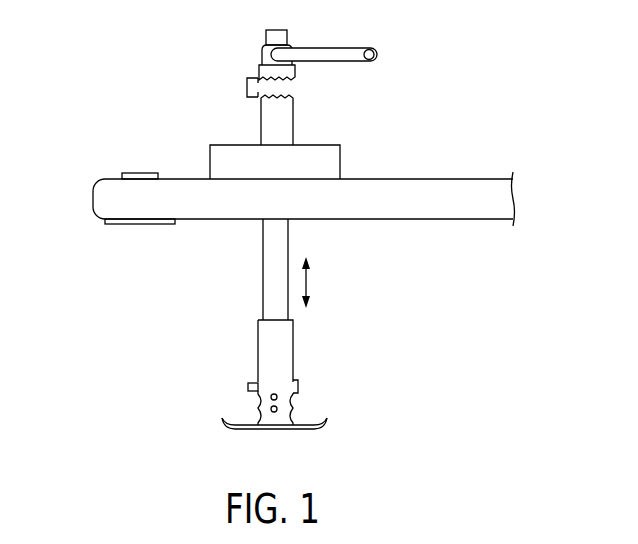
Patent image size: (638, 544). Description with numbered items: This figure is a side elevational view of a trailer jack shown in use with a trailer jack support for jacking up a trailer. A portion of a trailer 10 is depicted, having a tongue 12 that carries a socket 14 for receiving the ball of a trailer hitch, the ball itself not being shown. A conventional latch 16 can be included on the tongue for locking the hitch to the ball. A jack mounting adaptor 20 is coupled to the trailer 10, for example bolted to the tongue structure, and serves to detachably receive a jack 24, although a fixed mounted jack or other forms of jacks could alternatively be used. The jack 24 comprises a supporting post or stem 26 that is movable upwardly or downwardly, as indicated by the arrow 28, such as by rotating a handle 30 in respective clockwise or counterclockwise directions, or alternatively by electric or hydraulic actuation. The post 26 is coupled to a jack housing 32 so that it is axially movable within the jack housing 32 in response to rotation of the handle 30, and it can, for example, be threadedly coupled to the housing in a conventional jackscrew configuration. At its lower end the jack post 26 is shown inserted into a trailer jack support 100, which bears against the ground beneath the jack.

The trailer 10 is at (449, 164).
The tongue 12 is at (100, 198).
The socket 14 is at (140, 225).
The latch 16 is at (140, 172).
The jack mounting adaptor 20 is at (357, 146).
The jack 24 is at (318, 102).
The supporting post or stem 26 is at (283, 243).
The arrow 28 is at (306, 283).
The handle 30 is at (322, 52).
The jack housing 32 is at (262, 118).
The trailer jack support 100 is at (322, 357).